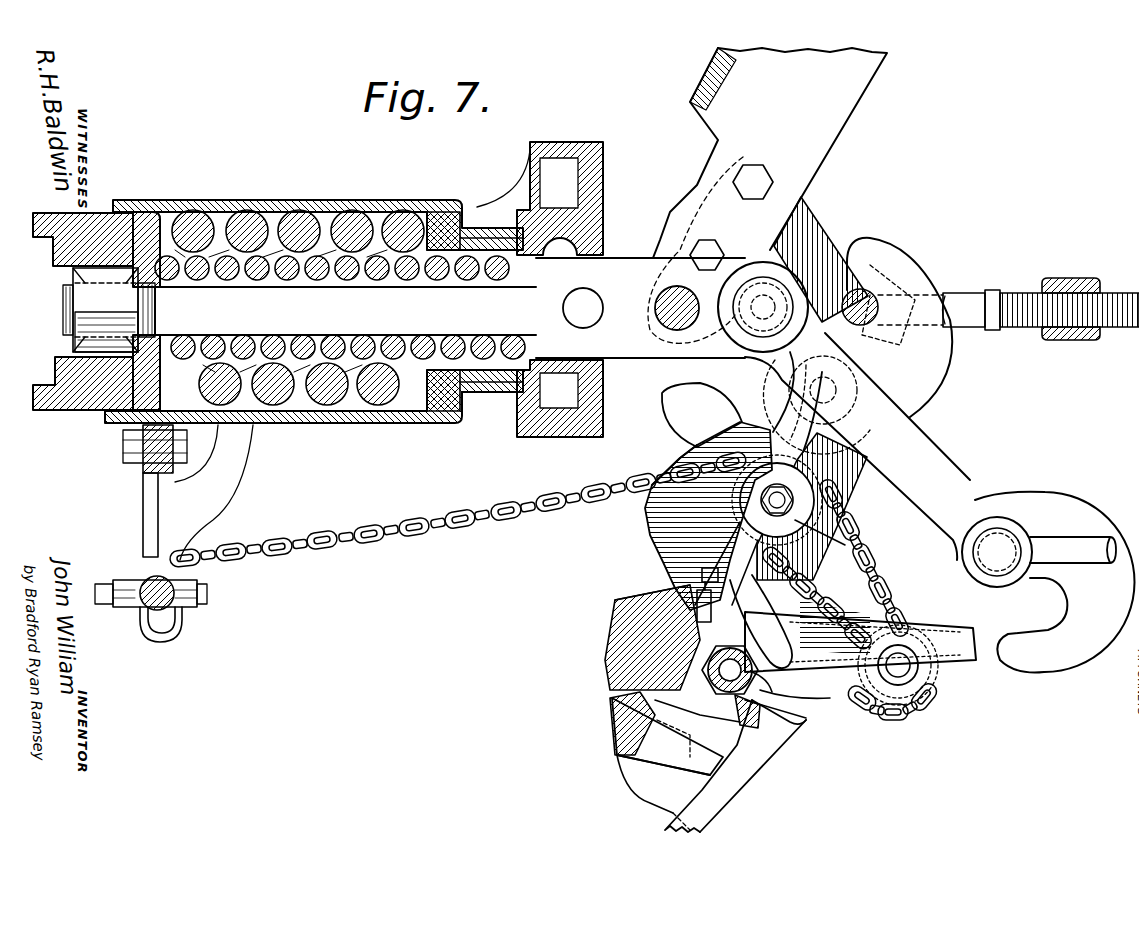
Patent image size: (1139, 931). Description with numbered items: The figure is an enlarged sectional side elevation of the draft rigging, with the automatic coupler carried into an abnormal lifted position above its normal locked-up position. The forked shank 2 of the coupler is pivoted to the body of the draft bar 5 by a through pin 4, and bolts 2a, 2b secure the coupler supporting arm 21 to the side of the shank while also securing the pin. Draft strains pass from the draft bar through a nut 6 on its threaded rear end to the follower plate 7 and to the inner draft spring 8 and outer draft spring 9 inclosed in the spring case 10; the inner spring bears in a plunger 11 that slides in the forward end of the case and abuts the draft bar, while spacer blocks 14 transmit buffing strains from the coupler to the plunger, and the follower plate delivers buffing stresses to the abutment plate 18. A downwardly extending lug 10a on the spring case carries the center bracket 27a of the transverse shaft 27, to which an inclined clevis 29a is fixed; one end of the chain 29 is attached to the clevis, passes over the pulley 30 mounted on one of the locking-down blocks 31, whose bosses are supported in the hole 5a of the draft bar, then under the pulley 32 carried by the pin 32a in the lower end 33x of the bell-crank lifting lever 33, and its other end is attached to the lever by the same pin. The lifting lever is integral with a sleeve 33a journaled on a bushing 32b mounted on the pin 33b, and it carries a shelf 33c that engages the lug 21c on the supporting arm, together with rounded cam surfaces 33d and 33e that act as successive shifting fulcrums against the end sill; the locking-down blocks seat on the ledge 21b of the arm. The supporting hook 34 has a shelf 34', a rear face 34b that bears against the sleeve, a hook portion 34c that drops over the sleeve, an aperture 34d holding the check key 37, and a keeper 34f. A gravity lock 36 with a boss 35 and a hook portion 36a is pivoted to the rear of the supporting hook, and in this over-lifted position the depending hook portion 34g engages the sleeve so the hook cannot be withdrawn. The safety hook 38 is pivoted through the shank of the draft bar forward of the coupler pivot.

The forked shank 2 is at (767, 314).
The bolt 2a is at (760, 173).
The bolt 2b is at (710, 241).
The through pin 4 is at (677, 295).
The draft bar 5 is at (611, 289).
The hole 5a is at (838, 398).
The nut 6 is at (109, 310).
The follower plate 7 is at (143, 226).
The inner draft spring 8 is at (266, 283).
The outer draft spring 9 is at (203, 226).
The spring case 10 is at (292, 207).
The downwardly extending lug 10a is at (166, 470).
The plunger 11 is at (466, 244).
The spacer blocks 14 is at (617, 357).
The abutment plate 18 is at (72, 290).
The coupler supporting arm 21 is at (852, 466).
The ledge 21b is at (888, 313).
The lug 21c is at (792, 600).
The transverse shaft 27 is at (137, 616).
The center bracket 27a is at (147, 505).
The chain 29 is at (326, 549).
The inclined clevis 29a is at (160, 637).
The pulley 30 is at (848, 548).
The locking-down blocks 31 is at (777, 500).
The pulley 32 is at (895, 698).
The pin 32a is at (908, 676).
The bushing 32b is at (715, 670).
The lifting lever 33 is at (757, 538).
The sleeve 33a is at (780, 694).
The pin 33b is at (757, 722).
The shelf 33c is at (642, 622).
The rounded cam surface 33d is at (650, 512).
The rounded cam surface 33e is at (664, 400).
The lower end of lifting lever 33x is at (956, 626).
The supporting hook 34 is at (685, 648).
The shelf 34' is at (618, 723).
The rear face 34b is at (662, 808).
The hook portion 34c is at (784, 733).
The aperture 34d is at (700, 575).
The keeper 34f is at (682, 760).
The depending hook portion 34g is at (766, 694).
The boss 35 is at (656, 700).
The gravity lock 36 is at (708, 787).
The hook portion 36a is at (705, 632).
The check key 37 is at (668, 600).
The safety hook 38 is at (1040, 512).